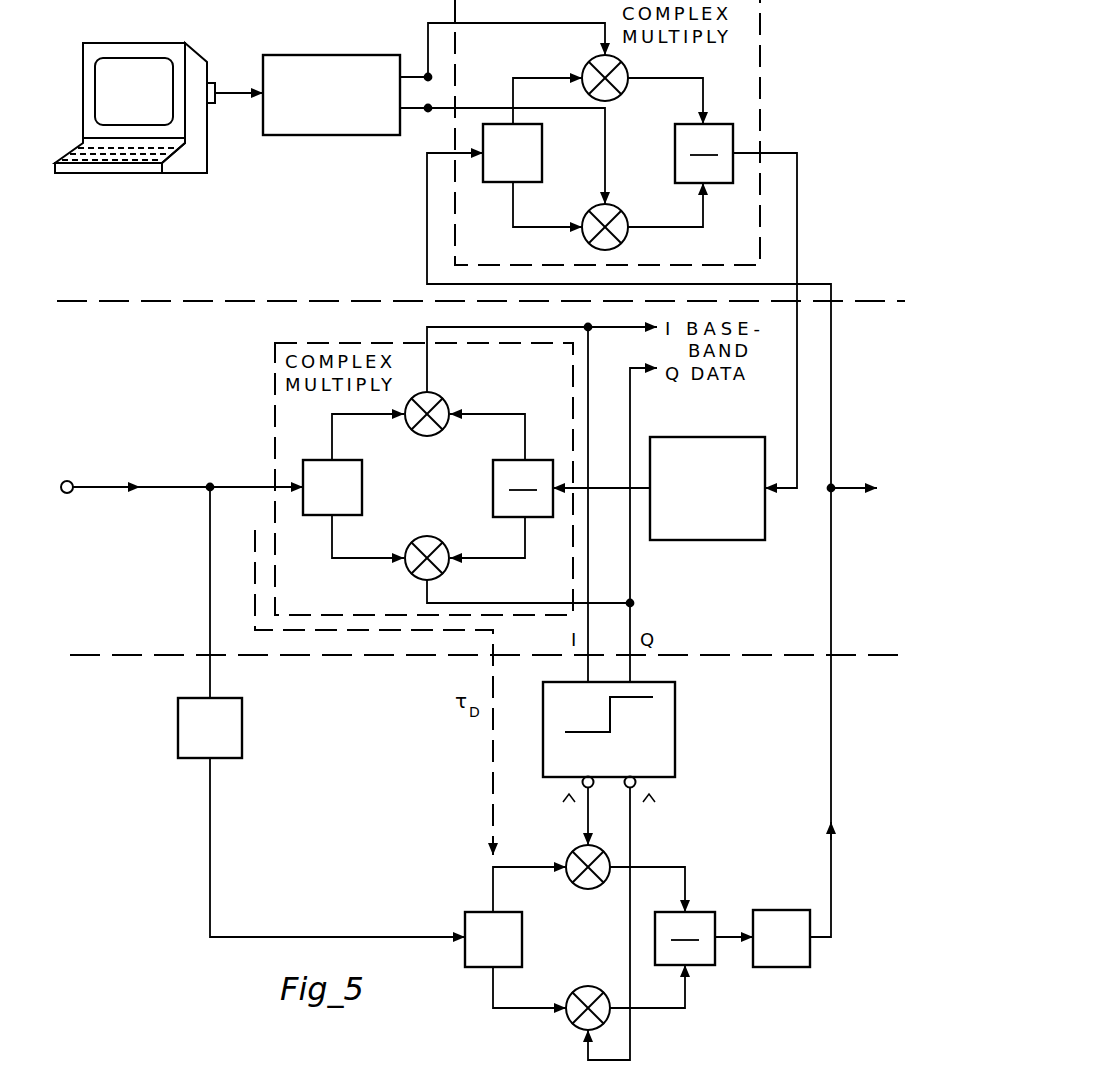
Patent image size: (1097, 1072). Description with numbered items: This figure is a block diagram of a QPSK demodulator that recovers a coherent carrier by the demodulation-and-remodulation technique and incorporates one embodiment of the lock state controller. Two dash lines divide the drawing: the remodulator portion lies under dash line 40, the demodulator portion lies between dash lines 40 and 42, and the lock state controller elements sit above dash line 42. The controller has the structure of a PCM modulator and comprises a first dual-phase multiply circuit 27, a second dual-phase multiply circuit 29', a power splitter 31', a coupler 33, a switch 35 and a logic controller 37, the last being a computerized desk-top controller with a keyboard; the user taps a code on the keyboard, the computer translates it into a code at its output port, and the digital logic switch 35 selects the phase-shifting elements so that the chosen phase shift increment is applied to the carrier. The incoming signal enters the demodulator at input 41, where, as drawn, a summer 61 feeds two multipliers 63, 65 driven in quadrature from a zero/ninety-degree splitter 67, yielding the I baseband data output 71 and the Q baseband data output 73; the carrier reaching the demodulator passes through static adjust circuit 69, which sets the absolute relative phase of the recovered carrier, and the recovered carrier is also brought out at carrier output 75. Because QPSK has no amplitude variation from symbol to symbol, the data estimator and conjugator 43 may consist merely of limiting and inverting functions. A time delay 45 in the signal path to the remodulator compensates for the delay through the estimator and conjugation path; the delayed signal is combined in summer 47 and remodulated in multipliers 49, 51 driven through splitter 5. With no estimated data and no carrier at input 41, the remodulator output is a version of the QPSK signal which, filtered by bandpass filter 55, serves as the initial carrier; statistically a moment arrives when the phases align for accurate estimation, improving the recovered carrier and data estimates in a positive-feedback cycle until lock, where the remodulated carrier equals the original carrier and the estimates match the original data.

The logic controller 37 is at (160, 43).
The switch 35 is at (350, 41).
The first dual-phase multiply circuit 27 is at (588, 58).
The second dual-phase multiply circuit 29' is at (619, 217).
The power splitter 31' is at (534, 152).
The coupler 33 is at (675, 155).
The dash line 42 is at (842, 301).
The dash line 40 is at (845, 655).
The input 41 is at (70, 481).
The summer 61 is at (312, 460).
The multiplier 63 is at (440, 397).
The multiplier 65 is at (438, 540).
The 0/90 phase splitter 67 is at (532, 460).
The static adjust circuit 69 is at (720, 420).
The I baseband data output 71 is at (625, 327).
The Q baseband data output 73 is at (634, 368).
The recovered carrier output 75 is at (840, 488).
The time delay 45 is at (242, 722).
The summer 47 is at (465, 920).
The data estimator and conjugator 43 is at (668, 682).
The multiplier 49 is at (575, 886).
The multiplier 51 is at (575, 990).
The 0/90 phase splitter 5 is at (693, 912).
The bandpass filter 55 is at (778, 910).